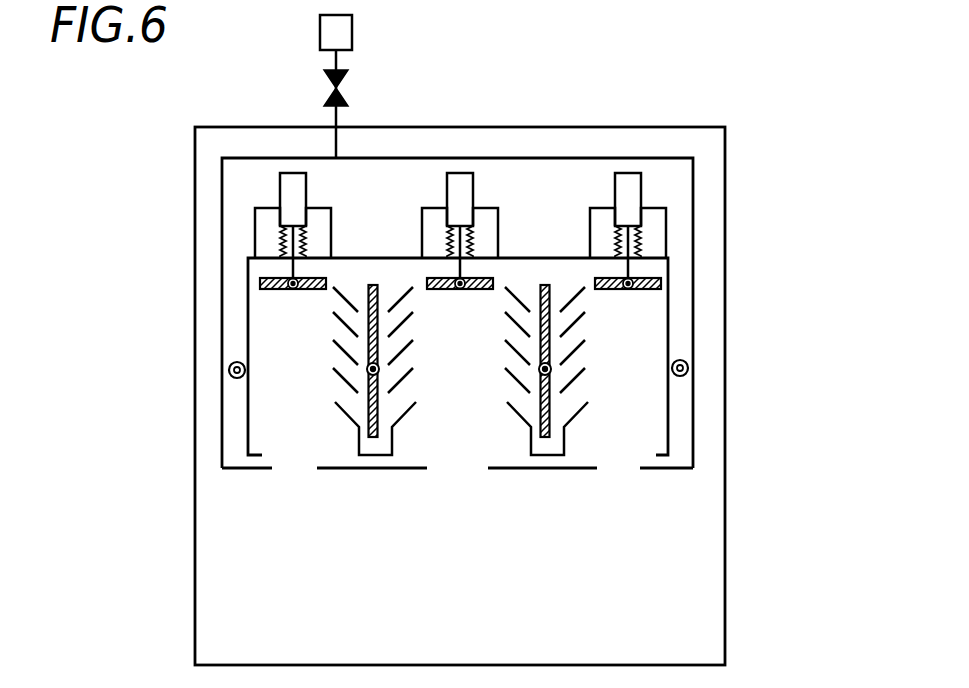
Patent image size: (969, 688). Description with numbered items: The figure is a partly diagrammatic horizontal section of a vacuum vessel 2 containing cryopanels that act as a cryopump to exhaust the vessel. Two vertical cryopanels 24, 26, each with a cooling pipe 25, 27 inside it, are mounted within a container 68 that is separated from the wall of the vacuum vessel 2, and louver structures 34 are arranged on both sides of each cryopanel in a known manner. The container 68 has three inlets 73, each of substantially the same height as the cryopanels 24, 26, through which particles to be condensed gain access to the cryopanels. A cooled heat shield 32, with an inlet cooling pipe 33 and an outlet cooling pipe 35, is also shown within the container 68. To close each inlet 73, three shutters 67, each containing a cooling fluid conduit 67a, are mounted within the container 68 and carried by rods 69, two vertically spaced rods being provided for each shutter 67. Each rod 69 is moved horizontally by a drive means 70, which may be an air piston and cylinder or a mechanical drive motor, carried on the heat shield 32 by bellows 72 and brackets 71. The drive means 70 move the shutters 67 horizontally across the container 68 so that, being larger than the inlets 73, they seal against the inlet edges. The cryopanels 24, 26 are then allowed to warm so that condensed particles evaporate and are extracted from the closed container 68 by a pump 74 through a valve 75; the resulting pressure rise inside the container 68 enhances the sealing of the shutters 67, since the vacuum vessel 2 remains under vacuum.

The vacuum vessel 2 is at (633, 126).
The cryopanel 24 is at (380, 413).
The cooling pipe 25 is at (369, 370).
The cryopanel 26 is at (556, 405).
The cooling pipe 27 is at (541, 369).
The cooled heat shield 32 is at (247, 427).
The inlet cooling pipe 33 is at (229, 372).
The louver structures 34 is at (398, 355).
The outlet cooling pipe 35 is at (689, 366).
The shutter 67 is at (268, 293).
The cooling fluid conduit 67a is at (293, 290).
The container 68 is at (487, 157).
The rod 69 is at (288, 270).
The drive means 70 is at (286, 183).
The bracket 71 is at (257, 212).
The bellows 72 is at (282, 242).
The inlet 73 is at (297, 469).
The pump 74 is at (324, 24).
The valve 75 is at (326, 80).